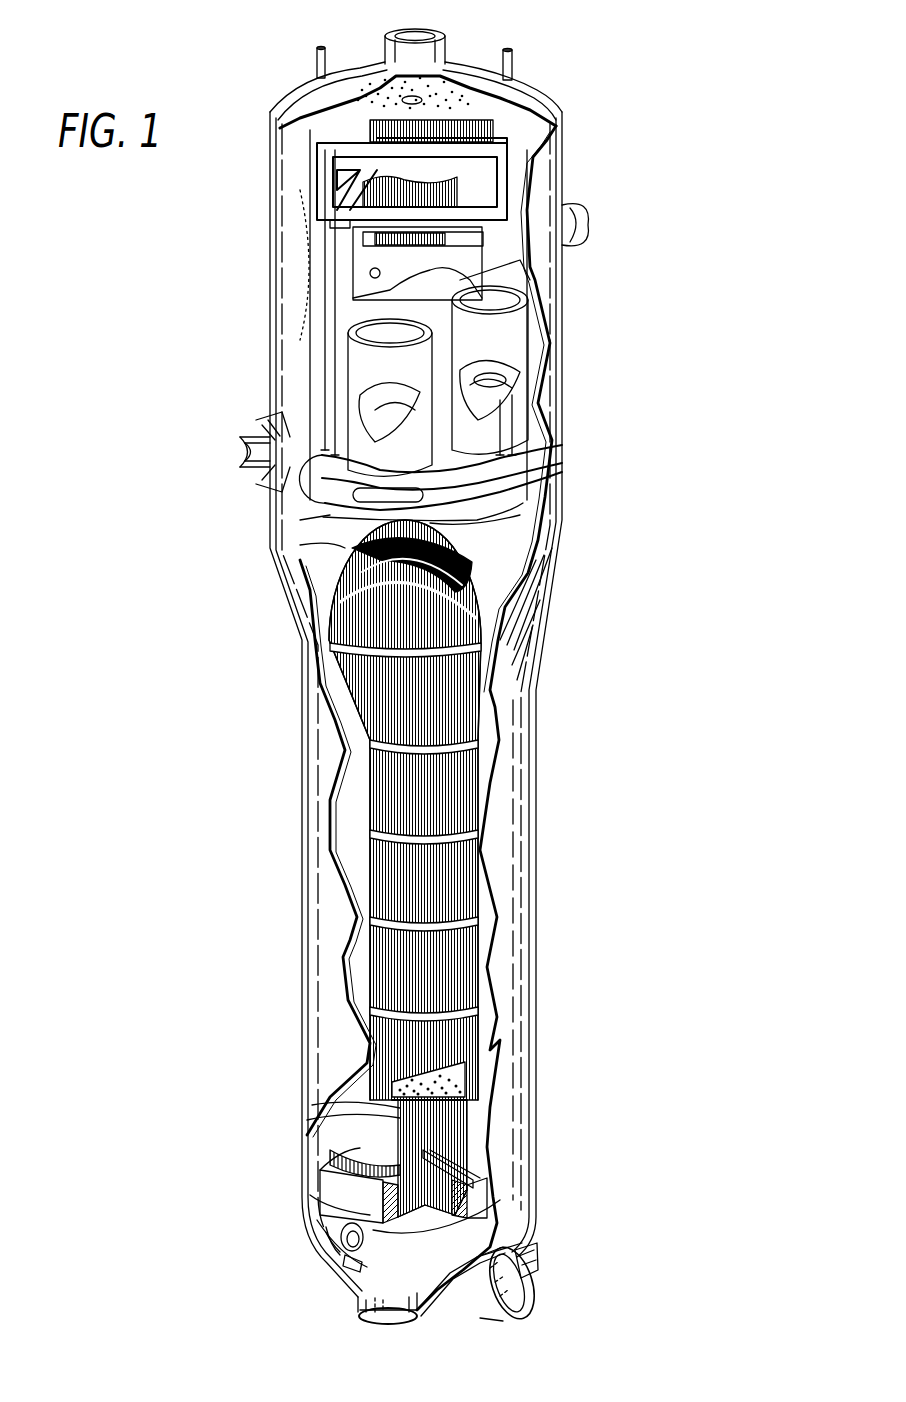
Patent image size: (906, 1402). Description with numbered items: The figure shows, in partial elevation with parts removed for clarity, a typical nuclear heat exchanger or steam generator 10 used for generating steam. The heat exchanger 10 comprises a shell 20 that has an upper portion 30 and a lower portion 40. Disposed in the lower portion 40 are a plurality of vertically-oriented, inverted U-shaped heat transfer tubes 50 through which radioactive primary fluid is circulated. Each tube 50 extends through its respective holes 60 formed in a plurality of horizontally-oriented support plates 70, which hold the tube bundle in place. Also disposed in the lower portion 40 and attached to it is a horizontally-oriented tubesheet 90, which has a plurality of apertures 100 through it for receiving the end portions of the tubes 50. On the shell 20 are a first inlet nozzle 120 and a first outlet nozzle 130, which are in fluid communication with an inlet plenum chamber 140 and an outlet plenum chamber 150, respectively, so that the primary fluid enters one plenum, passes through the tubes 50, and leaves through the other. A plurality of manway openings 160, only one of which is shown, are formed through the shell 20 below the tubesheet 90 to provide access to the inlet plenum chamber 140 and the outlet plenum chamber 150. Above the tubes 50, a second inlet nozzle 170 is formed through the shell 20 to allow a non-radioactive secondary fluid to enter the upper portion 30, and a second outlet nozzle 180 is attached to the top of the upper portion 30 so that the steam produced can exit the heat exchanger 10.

The nuclear heat exchanger 10 is at (668, 186).
The shell 20 is at (550, 366).
The upper portion 30 is at (557, 516).
The lower portion 40 is at (522, 694).
The heat transfer tubes 50 is at (450, 768).
The holes 60 is at (387, 1088).
The support plates 70 is at (403, 1103).
The tubesheet 90 is at (480, 1192).
The apertures 100 is at (493, 1226).
The first inlet nozzle 120 is at (355, 1297).
The first outlet nozzle 130 is at (497, 1300).
The inlet plenum chamber 140 is at (337, 1228).
The outlet plenum chamber 150 is at (510, 1273).
The manway openings 160 is at (350, 1258).
The second inlet nozzle 170 is at (242, 437).
The second outlet nozzle 180 is at (420, 32).